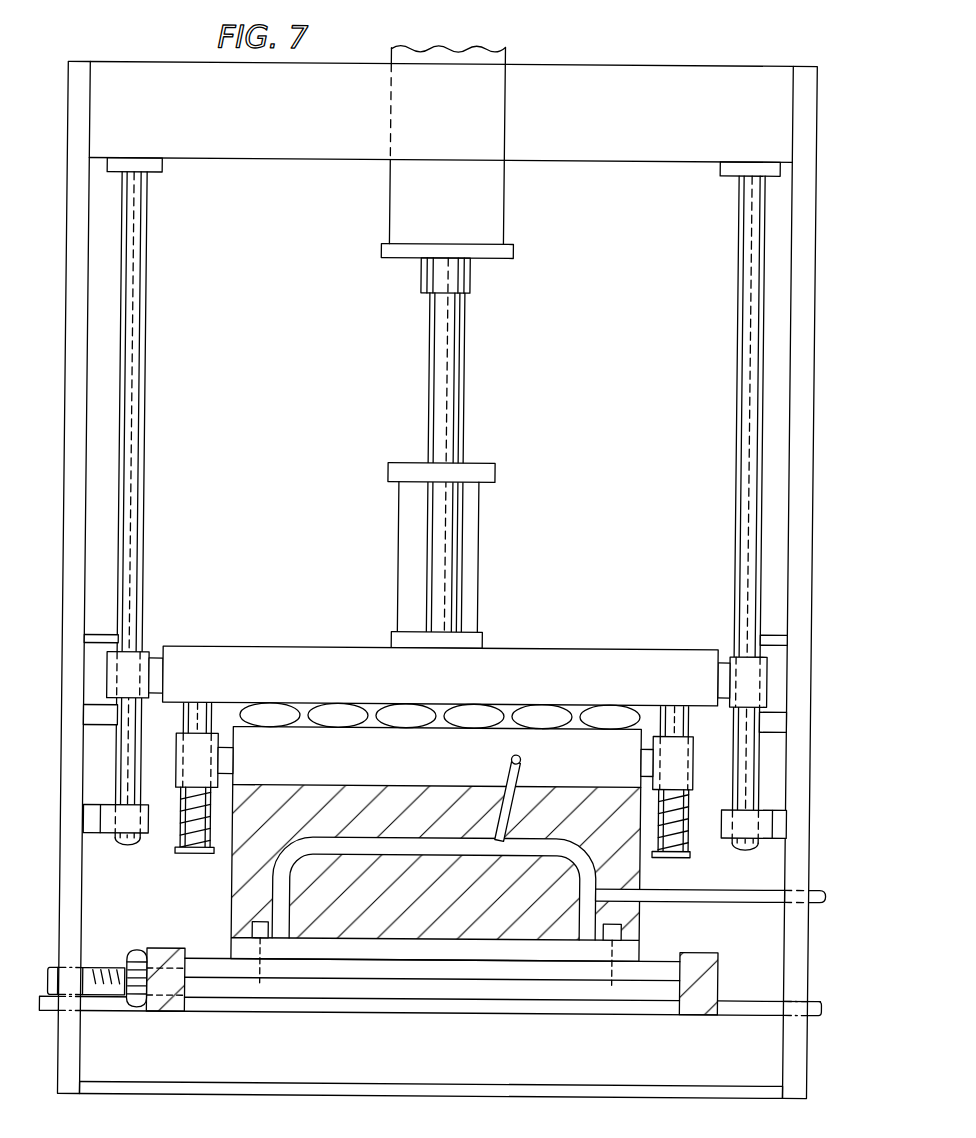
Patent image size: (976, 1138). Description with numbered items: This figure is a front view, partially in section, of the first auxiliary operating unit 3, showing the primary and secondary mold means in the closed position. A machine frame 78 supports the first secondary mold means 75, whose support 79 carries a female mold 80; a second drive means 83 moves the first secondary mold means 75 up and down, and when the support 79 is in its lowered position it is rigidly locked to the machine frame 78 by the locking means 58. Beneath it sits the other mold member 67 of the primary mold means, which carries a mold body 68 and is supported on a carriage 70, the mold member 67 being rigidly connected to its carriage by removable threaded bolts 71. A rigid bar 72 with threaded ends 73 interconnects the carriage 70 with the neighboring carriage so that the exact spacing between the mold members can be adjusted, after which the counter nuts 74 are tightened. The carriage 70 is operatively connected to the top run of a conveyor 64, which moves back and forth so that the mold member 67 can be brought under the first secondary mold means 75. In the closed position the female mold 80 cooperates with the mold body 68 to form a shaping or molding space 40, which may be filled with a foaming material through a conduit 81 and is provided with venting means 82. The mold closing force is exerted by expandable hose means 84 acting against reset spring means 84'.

The first auxiliary operating unit 3 is at (683, 40).
The shaping or molding space 40 is at (582, 866).
The locking means 58 is at (98, 670).
The conveyor 64 is at (52, 1011).
The mold member 67 is at (636, 955).
The mold body 68 is at (450, 924).
The carriage 70 is at (228, 975).
The threaded bolts 71 is at (255, 924).
The rigid bar 72 is at (58, 968).
The threaded ends 73 is at (114, 992).
The counter nuts 74 is at (140, 999).
The first secondary mold means 75 is at (636, 626).
The machine frame 78 is at (74, 311).
The support 79 is at (531, 658).
The female mold 80 is at (243, 869).
The conduit 81 is at (822, 889).
The venting means 82 is at (521, 772).
The second drive means 83 is at (498, 199).
The expandable hose means 84 is at (440, 696).
The reset spring means 84' is at (686, 789).